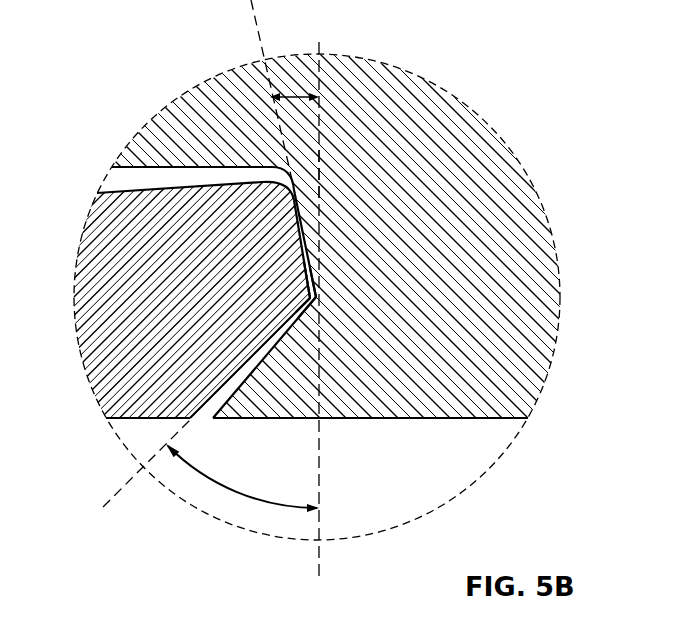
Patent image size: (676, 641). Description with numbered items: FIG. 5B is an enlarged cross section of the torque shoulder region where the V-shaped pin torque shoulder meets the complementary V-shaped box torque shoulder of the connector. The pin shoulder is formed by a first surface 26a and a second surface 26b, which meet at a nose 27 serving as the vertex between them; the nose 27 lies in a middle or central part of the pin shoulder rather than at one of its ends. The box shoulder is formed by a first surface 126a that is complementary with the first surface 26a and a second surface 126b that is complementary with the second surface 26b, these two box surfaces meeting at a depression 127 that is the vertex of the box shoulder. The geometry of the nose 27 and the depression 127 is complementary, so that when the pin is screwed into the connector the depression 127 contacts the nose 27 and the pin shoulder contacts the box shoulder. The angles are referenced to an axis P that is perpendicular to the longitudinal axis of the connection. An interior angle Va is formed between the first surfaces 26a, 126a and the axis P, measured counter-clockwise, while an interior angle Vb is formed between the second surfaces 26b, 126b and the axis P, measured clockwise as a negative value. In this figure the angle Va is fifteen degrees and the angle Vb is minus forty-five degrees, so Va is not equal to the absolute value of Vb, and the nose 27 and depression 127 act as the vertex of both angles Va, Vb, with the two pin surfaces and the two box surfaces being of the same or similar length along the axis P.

The first surface 26a is at (298, 218).
The second surface 26b is at (233, 378).
The nose 27 is at (294, 313).
The first surface 126a is at (308, 248).
The second surface 126b is at (290, 333).
The depression 127 is at (316, 297).
The interior angle Va is at (294, 95).
The interior angle Vb is at (233, 493).
The axis P is at (321, 172).